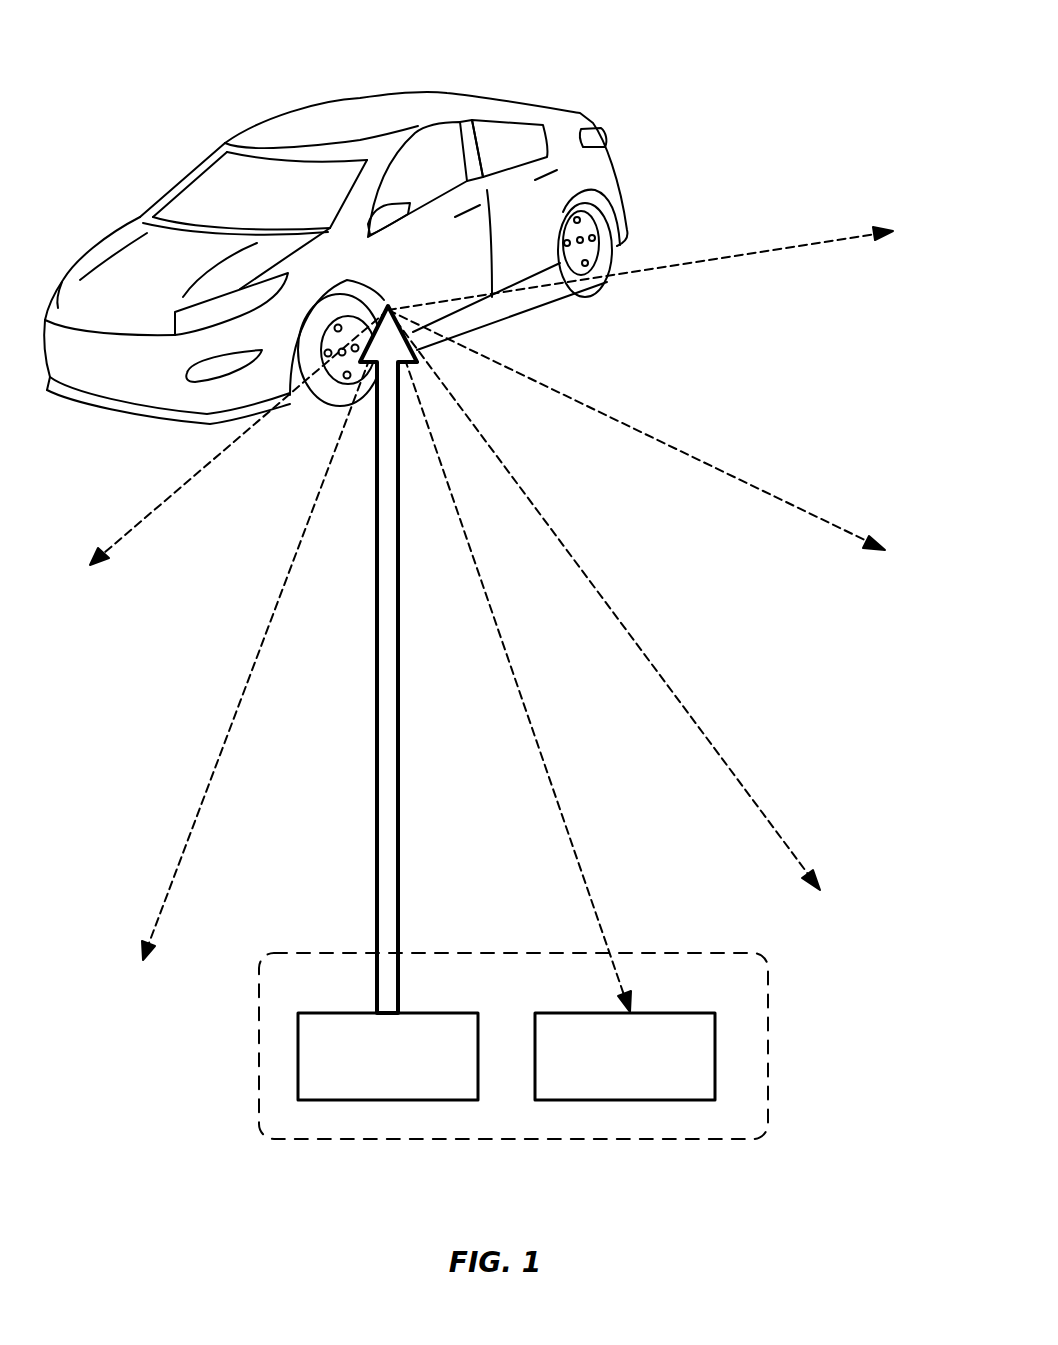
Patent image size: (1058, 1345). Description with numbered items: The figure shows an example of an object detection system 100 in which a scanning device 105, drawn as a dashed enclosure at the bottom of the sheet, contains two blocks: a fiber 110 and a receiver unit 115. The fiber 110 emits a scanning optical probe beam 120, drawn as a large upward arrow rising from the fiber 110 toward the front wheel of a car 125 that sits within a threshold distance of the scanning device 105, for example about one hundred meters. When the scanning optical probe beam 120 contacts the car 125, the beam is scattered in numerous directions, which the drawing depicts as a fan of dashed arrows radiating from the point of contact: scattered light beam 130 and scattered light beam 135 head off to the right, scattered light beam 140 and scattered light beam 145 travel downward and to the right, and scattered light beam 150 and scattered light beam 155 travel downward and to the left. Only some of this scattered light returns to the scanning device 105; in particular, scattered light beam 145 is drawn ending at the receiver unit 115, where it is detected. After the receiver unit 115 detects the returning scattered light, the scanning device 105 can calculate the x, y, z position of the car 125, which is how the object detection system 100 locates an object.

The object detection system 100 is at (783, 88).
The scanning device 105 is at (703, 953).
The fiber 110 is at (428, 1013).
The receiver unit 115 is at (672, 1013).
The scanning optical probe beam 120 is at (400, 757).
The car 125 is at (463, 97).
The scattered light beam 130 is at (770, 250).
The scattered light beam 135 is at (640, 435).
The scattered light beam 140 is at (596, 592).
The scattered light beam 145 is at (520, 698).
The scattered light beam 150 is at (235, 720).
The scattered light beam 155 is at (185, 485).